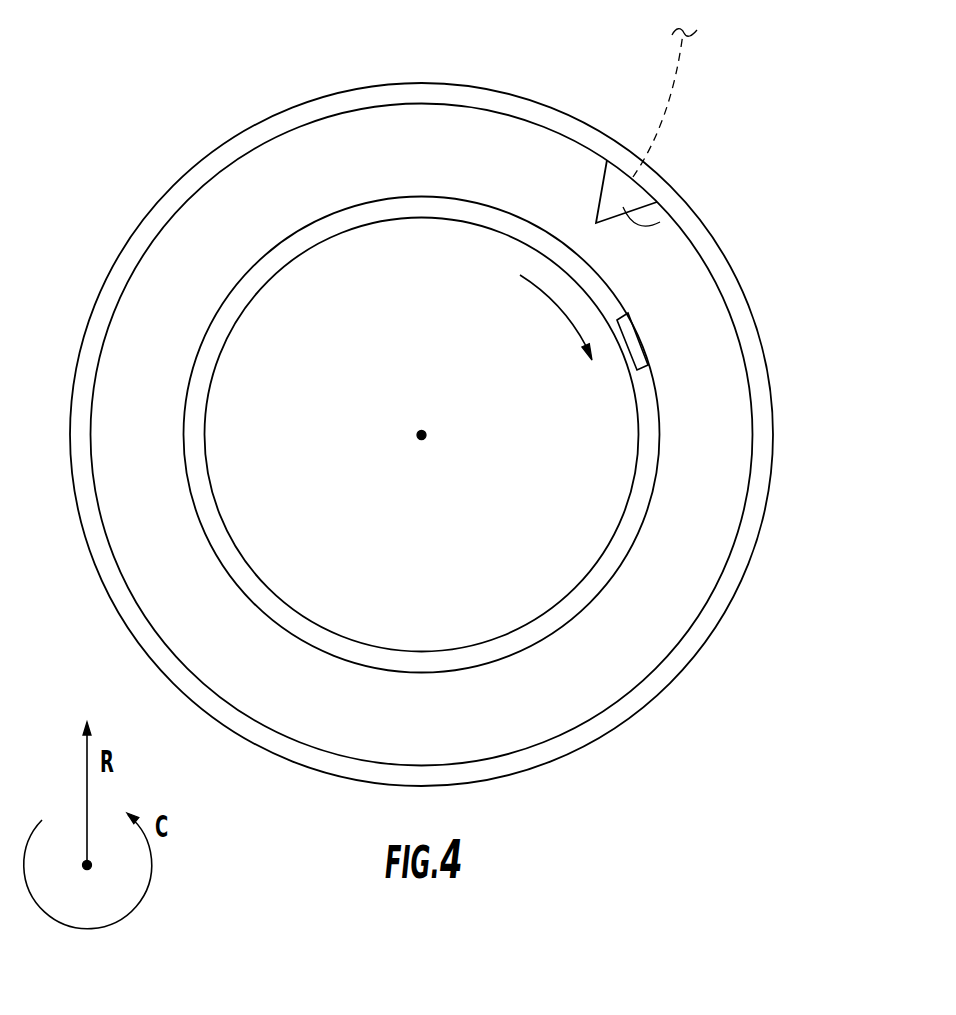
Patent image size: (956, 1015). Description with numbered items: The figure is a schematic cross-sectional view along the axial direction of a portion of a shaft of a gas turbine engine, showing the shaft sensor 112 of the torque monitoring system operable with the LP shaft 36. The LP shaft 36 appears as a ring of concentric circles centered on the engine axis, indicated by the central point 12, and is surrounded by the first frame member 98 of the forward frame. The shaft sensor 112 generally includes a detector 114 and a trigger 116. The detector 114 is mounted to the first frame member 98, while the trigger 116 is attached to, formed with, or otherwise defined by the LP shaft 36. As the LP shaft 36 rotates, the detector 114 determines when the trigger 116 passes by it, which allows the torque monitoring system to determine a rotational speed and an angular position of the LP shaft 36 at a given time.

The first frame member 98 is at (285, 113).
The LP shaft 36 is at (345, 213).
The engine axis 12 is at (420, 445).
The shaft sensor 112 is at (586, 158).
The detector 114 is at (655, 222).
The trigger 116 is at (635, 345).